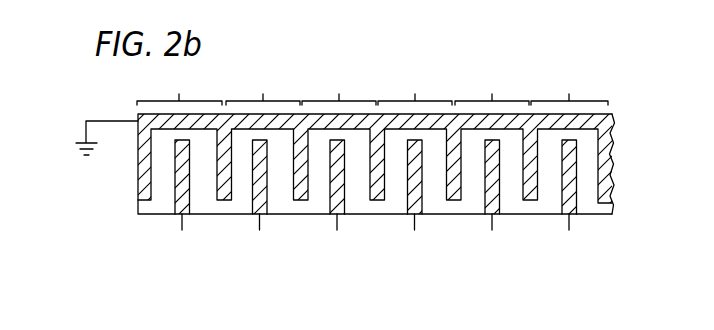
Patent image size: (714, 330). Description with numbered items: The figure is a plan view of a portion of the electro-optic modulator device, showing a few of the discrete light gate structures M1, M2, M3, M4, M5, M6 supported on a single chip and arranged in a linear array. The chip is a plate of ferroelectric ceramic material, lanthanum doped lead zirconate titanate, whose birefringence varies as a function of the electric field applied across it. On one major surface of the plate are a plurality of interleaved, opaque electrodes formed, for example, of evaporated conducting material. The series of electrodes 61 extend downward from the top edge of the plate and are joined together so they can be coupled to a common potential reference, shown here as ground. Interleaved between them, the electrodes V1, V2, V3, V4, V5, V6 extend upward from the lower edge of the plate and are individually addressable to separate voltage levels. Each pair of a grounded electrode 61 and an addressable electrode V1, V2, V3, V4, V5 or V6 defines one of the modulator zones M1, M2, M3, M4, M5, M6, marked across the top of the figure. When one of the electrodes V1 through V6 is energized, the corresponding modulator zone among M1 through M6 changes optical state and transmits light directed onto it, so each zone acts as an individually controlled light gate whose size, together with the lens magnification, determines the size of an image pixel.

The electrodes 61 is at (140, 163).
The individually addressable electrode V1 is at (190, 192).
The individually addressable electrode V2 is at (268, 192).
The individually addressable electrode V3 is at (345, 192).
The individually addressable electrode V4 is at (423, 192).
The individually addressable electrode V5 is at (500, 192).
The individually addressable electrode V6 is at (577, 192).
The electro-optic modulator M1 is at (179, 89).
The electro-optic modulator M2 is at (263, 89).
The electro-optic modulator M3 is at (339, 89).
The electro-optic modulator M4 is at (415, 89).
The electro-optic modulator M5 is at (492, 89).
The electro-optic modulator M6 is at (569, 89).